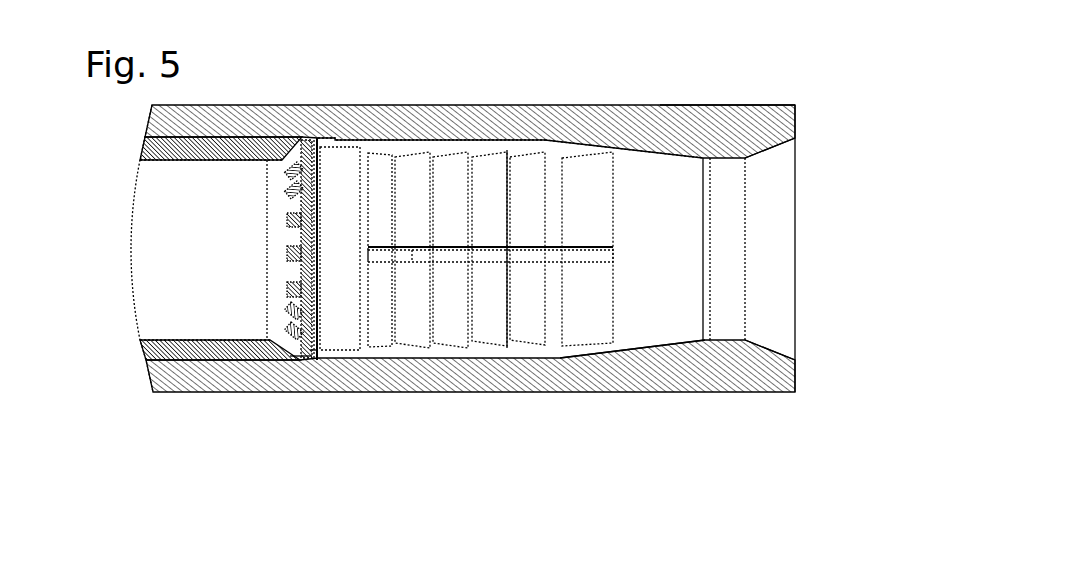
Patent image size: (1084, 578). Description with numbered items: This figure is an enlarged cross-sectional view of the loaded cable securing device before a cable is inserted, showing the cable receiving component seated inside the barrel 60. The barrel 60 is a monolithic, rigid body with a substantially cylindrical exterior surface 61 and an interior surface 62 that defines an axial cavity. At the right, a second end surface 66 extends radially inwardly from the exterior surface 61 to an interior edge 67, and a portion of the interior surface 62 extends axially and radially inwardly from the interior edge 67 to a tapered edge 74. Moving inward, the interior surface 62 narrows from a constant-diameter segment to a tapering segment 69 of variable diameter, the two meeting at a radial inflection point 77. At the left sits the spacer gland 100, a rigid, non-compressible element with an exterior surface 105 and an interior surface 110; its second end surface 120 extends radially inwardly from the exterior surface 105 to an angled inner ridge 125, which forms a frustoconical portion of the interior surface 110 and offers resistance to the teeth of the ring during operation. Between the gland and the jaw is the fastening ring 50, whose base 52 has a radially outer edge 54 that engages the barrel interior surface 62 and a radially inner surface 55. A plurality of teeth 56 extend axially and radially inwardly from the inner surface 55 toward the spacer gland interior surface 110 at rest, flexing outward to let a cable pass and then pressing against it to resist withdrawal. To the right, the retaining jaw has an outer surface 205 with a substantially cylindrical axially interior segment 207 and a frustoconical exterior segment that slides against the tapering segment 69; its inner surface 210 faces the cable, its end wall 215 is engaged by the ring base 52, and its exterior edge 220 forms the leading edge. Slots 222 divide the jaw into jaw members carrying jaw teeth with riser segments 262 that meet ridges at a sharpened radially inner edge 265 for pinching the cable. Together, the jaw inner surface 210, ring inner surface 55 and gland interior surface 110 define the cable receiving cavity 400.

The fastening ring 50 is at (300, 158).
The fastening ring base 52 is at (315, 356).
The radially outer edge 54 is at (308, 362).
The radially inner surface 55 is at (300, 276).
The teeth 56 is at (291, 166).
The barrel 60 is at (685, 121).
The exterior surface 61 is at (438, 105).
The interior surface 62 is at (389, 136).
The second end surface 66 is at (797, 378).
The interior edge 67 is at (797, 362).
The tapering segment 69 is at (618, 350).
The tapered edge 74 is at (746, 156).
The radial inflection point 77 is at (405, 361).
The spacer gland 100 is at (141, 353).
The exterior surface 105 is at (172, 362).
The interior surface 110 is at (227, 343).
The second end surface 120 is at (298, 363).
The angled inner ridge 125 is at (276, 331).
The outer surface 205 is at (393, 360).
The axially interior segment 207 is at (580, 148).
The inner surface 210 is at (608, 192).
The end wall 215 is at (315, 137).
The exterior edge 220 is at (706, 343).
The slots 222 is at (453, 246).
The riser segments 262 is at (447, 346).
The radially inner edge 265 is at (506, 331).
The cable receiving cavity 400 is at (812, 233).